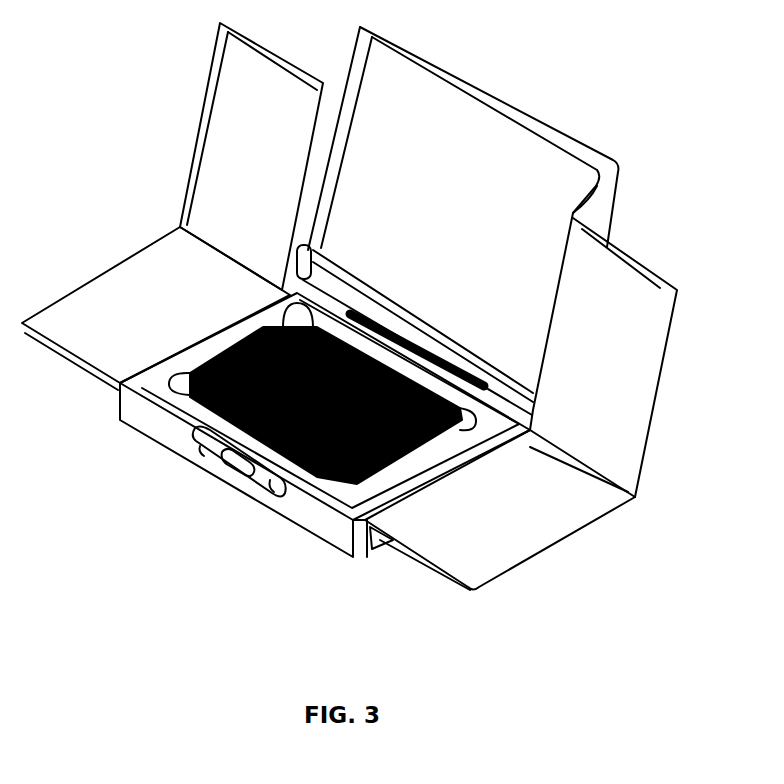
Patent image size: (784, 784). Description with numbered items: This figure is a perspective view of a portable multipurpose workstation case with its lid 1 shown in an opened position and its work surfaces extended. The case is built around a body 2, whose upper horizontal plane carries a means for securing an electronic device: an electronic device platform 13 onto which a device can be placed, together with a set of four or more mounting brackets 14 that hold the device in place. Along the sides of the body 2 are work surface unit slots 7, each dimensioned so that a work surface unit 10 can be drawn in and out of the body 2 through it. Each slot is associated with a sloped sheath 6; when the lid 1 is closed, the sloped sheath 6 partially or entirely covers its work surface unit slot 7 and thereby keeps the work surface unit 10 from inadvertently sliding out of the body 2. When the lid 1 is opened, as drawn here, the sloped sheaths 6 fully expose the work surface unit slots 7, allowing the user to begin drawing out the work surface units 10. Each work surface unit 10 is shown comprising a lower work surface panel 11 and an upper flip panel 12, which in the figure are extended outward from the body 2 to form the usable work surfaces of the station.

The lid 1 is at (483, 82).
The body 2 is at (120, 420).
The sloped sheath 6 is at (580, 218).
The work surface unit slot 7 is at (362, 530).
The work surface unit 10 is at (93, 273).
The lower work surface panel 11 is at (502, 558).
The upper flip panel 12 is at (627, 420).
The electronic device platform 13 is at (358, 512).
The mounting bracket 14 is at (190, 377).